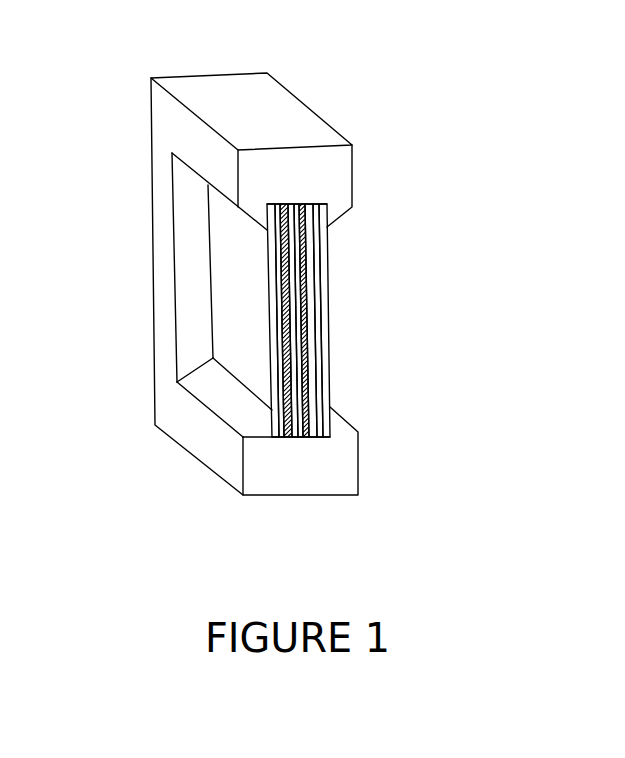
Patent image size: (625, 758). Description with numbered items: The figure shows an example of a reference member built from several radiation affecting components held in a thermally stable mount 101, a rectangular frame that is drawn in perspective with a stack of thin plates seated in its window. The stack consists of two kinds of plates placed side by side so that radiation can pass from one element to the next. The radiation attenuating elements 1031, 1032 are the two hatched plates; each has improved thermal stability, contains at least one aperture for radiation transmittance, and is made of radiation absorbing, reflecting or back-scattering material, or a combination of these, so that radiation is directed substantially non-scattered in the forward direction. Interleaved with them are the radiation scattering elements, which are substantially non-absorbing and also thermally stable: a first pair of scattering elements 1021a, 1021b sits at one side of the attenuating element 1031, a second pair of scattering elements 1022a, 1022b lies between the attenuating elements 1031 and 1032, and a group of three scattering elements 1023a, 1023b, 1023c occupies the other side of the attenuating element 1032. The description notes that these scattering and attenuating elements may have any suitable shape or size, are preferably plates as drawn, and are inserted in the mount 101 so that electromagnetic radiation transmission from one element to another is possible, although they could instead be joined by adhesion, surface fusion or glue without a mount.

The thermally stable mount 101 is at (237, 107).
The radiation scattering element 1021a is at (271, 438).
The radiation scattering element 1021b is at (258, 438).
The radiation attenuating element 1031 is at (284, 438).
The radiation scattering element 1022a is at (296, 438).
The radiation scattering element 1022b is at (314, 438).
The radiation attenuating element 1032 is at (302, 205).
The radiation scattering element 1023c is at (310, 283).
The radiation scattering element 1023b is at (317, 335).
The radiation scattering element 1023a is at (328, 382).